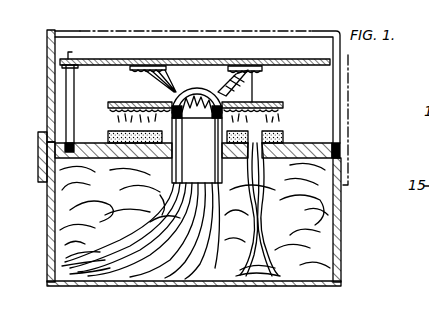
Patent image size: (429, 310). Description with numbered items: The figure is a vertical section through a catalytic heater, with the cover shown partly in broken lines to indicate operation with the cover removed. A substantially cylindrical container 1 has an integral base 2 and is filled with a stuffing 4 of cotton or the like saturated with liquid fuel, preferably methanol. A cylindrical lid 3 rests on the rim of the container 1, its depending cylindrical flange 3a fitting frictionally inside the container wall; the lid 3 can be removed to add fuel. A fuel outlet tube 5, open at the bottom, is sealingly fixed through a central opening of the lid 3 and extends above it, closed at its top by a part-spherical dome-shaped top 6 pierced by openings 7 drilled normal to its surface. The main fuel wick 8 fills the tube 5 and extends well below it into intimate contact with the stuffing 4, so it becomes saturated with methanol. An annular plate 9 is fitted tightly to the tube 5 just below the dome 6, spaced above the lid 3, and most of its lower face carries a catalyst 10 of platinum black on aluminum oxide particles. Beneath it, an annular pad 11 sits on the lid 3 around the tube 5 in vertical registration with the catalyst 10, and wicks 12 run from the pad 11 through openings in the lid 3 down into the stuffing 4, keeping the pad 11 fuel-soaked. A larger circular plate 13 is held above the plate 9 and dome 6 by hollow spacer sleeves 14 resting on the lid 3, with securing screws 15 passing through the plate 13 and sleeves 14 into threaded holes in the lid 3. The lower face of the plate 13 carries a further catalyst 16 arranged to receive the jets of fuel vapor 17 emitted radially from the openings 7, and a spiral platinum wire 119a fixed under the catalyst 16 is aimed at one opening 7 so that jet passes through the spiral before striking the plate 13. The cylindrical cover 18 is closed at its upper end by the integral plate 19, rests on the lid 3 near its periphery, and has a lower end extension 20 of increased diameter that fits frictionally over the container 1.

The container 1 is at (341, 256).
The base 2 is at (303, 289).
The lid 3 is at (322, 146).
The depending cylindrical flange 3a is at (342, 146).
The stuffing 4 is at (312, 233).
The fuel outlet tube 5 is at (184, 162).
The dome-shaped top 6 is at (196, 88).
The openings 7 is at (173, 88).
The main fuel wick 8 is at (190, 240).
The annular plate 9 is at (108, 104).
The catalyst 10 is at (114, 118).
The annular pad 11 is at (283, 139).
The wicks 12 is at (260, 276).
The circular plate 13 is at (285, 60).
The hollow spacer sleeves 14 is at (66, 92).
The securing screws 15 is at (70, 58).
The further catalyst 16 is at (107, 60).
The jets of fuel vapor 17 is at (153, 78).
The cover 18 is at (47, 77).
The integral plate 19 is at (67, 30).
The lower end extension 20 is at (38, 163).
The spiral platinum wire 119a is at (253, 90).